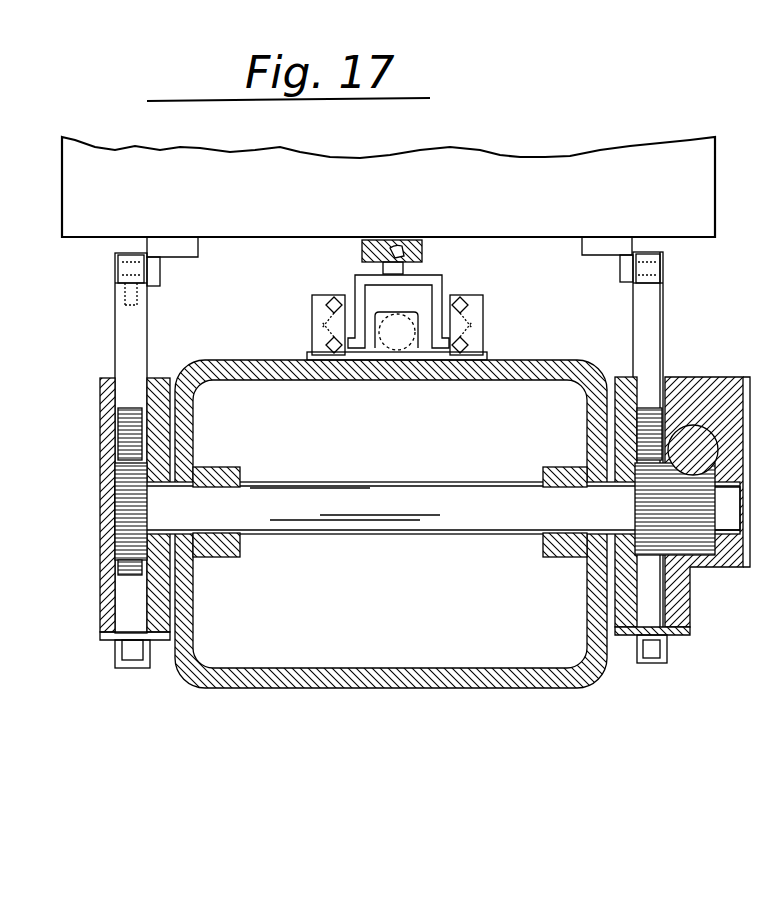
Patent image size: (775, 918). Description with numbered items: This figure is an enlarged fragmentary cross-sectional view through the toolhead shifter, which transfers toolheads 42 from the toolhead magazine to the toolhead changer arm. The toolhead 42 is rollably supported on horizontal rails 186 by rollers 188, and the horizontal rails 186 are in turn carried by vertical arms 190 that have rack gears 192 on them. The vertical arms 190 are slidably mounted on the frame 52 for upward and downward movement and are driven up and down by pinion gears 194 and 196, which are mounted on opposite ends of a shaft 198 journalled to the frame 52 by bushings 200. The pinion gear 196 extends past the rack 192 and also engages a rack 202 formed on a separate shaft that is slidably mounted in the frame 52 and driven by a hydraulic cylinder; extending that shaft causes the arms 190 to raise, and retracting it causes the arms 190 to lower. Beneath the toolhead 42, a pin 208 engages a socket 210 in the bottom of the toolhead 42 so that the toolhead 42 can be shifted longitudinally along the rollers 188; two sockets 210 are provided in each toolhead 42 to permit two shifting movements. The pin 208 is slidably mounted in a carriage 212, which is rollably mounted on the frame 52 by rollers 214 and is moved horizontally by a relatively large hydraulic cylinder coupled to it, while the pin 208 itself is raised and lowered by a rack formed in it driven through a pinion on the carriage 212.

The toolhead 42 is at (602, 160).
The frame 52 is at (431, 693).
The horizontal rails 186 is at (118, 268).
The rollers 188 is at (160, 279).
The vertical arms 190 is at (122, 334).
The rack gears 192 is at (127, 432).
The pinion gear 194 is at (128, 508).
The pinion gear 196 is at (655, 505).
The shaft 198 is at (400, 538).
The bushings 200 is at (218, 557).
The rack 202 is at (695, 435).
The pin 208 is at (403, 272).
The socket 210 is at (396, 252).
The carriage 212 is at (362, 280).
The rollers 214 is at (340, 293).